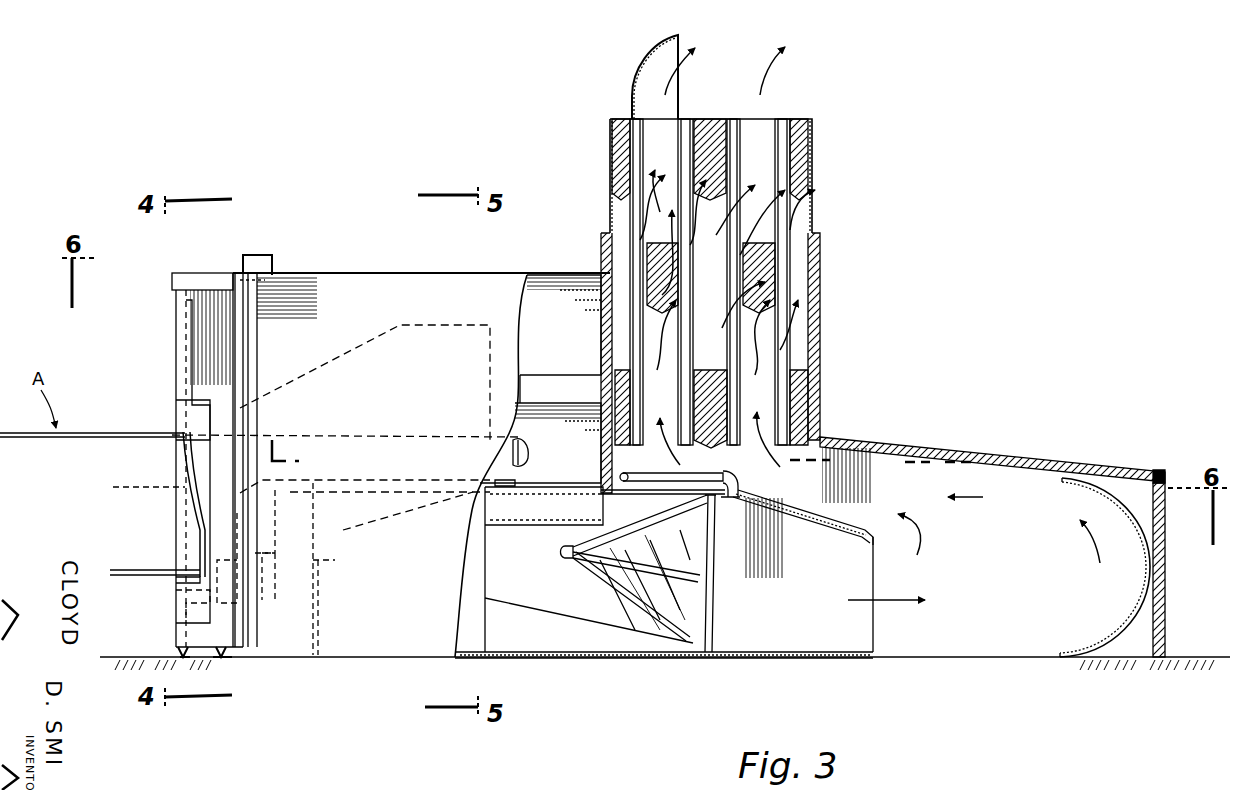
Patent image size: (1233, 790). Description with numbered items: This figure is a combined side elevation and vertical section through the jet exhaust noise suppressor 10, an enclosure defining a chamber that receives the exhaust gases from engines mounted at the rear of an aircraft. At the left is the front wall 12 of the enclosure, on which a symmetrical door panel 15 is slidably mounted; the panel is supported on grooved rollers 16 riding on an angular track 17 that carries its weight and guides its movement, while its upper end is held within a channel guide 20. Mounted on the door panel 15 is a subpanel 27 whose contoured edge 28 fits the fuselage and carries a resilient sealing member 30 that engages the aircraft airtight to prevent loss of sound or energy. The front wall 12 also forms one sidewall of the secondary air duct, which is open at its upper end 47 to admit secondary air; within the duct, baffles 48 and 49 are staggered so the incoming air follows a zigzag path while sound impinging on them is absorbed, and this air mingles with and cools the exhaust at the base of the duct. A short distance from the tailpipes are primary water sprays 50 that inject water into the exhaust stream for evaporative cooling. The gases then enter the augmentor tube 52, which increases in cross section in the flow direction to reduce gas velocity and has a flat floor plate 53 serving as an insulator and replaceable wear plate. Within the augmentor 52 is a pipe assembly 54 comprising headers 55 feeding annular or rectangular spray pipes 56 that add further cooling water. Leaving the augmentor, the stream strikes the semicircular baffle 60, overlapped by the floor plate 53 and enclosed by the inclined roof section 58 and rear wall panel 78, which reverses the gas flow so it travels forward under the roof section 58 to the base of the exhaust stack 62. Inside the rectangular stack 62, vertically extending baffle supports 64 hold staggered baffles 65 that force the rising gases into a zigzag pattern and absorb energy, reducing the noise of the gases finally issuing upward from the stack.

The suppressor 10 is at (864, 385).
The front wall 12 is at (250, 305).
The door panel 15 is at (205, 331).
The roller 16 is at (178, 654).
The angular track 17 is at (226, 657).
The channel guide 20 is at (210, 282).
The subpanel 27 is at (190, 410).
The contoured edge 28 is at (184, 445).
The resilient sealing member 30 is at (180, 582).
The upper end of secondary air duct 47 is at (350, 273).
The baffle 48 is at (572, 337).
The baffle 49 is at (572, 467).
The primary water spray 50 is at (276, 569).
The augmentor tube 52 is at (490, 597).
The floor plate 53 is at (660, 658).
The pipe assembly 54 is at (712, 580).
The header 55 is at (573, 558).
The spray pipe 56 is at (632, 592).
The inclined roof section 58 is at (1040, 471).
The baffle 60 is at (1146, 592).
The exhaust stack 62 is at (812, 176).
The baffle support 64 is at (786, 204).
The baffle 65 is at (770, 286).
The rear wall panel 78 is at (1165, 605).